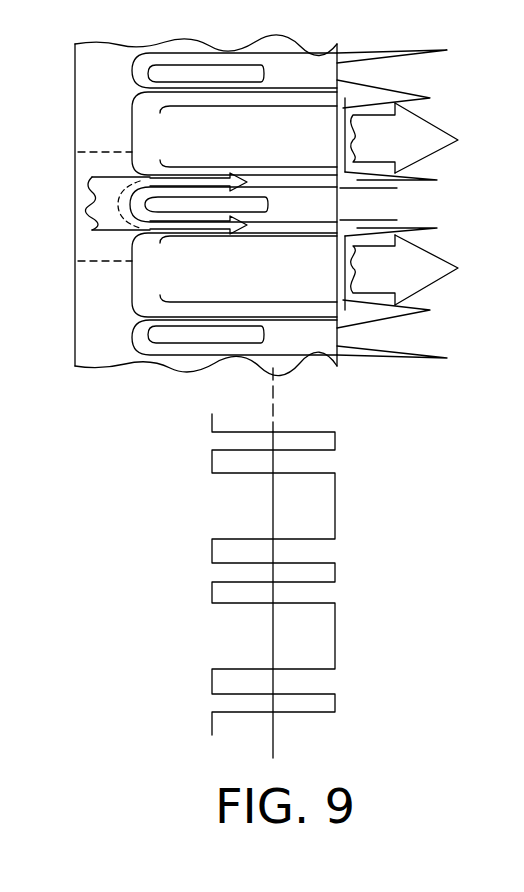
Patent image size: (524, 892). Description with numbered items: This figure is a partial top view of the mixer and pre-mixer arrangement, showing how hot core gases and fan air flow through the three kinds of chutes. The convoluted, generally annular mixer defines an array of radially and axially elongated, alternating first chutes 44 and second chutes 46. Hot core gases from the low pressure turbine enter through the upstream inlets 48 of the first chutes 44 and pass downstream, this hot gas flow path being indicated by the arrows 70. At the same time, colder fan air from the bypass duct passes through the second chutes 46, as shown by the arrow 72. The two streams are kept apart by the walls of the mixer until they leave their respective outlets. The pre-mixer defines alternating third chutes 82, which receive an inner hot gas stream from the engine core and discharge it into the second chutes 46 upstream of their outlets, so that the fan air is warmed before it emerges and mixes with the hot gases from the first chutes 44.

The first chutes 44 is at (322, 122).
The second chutes 46 is at (276, 176).
The upstream inlet 48 is at (75, 152).
The arrow 70 is at (458, 140).
The arrow 72 is at (95, 201).
The third chutes 82 is at (180, 68).